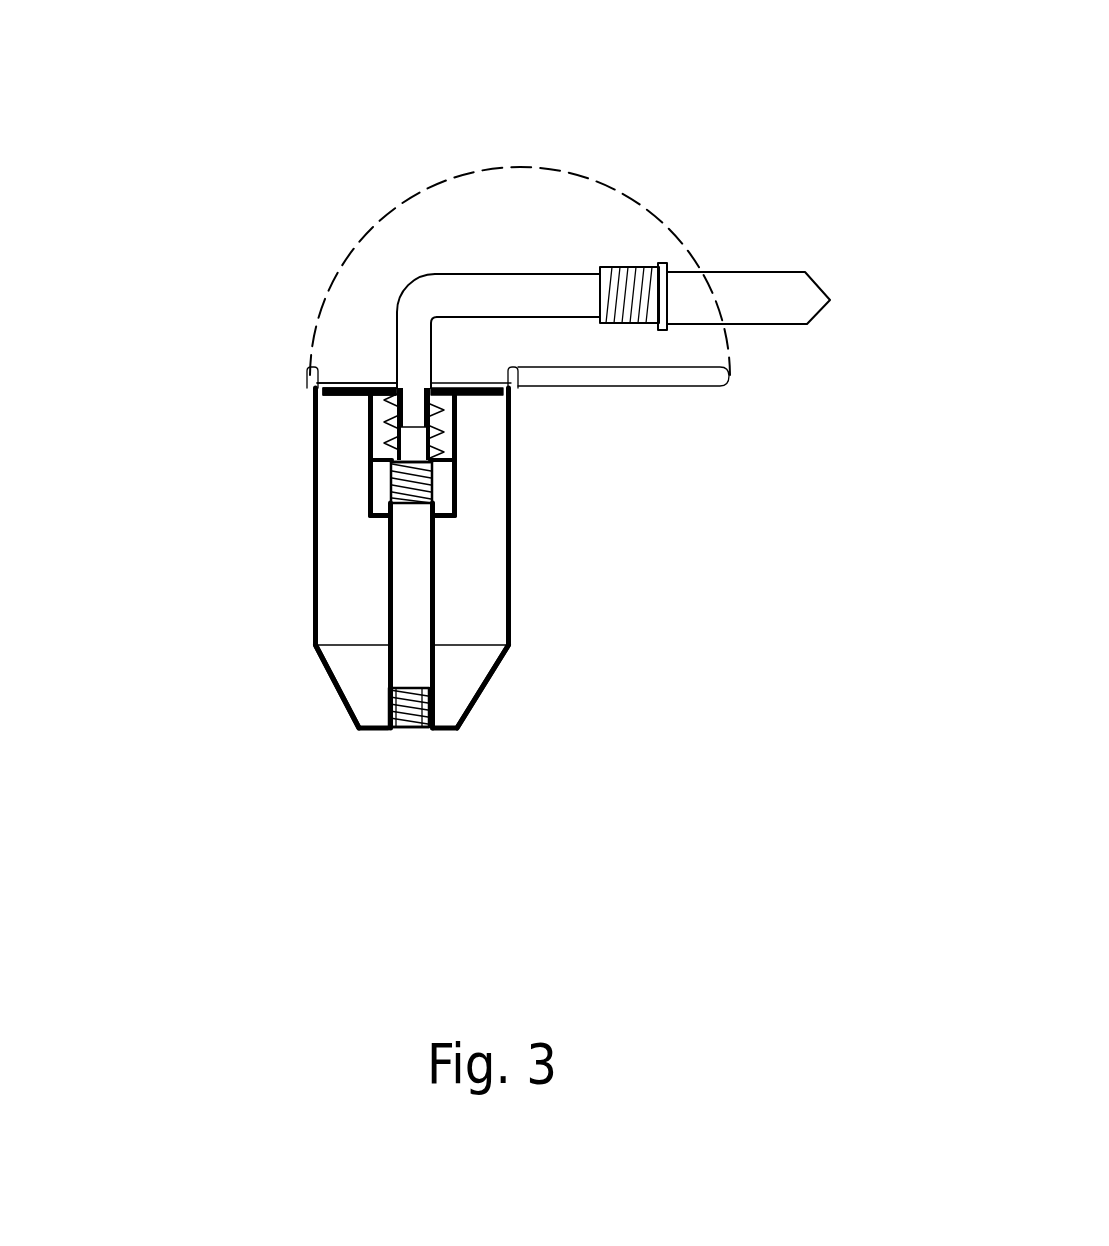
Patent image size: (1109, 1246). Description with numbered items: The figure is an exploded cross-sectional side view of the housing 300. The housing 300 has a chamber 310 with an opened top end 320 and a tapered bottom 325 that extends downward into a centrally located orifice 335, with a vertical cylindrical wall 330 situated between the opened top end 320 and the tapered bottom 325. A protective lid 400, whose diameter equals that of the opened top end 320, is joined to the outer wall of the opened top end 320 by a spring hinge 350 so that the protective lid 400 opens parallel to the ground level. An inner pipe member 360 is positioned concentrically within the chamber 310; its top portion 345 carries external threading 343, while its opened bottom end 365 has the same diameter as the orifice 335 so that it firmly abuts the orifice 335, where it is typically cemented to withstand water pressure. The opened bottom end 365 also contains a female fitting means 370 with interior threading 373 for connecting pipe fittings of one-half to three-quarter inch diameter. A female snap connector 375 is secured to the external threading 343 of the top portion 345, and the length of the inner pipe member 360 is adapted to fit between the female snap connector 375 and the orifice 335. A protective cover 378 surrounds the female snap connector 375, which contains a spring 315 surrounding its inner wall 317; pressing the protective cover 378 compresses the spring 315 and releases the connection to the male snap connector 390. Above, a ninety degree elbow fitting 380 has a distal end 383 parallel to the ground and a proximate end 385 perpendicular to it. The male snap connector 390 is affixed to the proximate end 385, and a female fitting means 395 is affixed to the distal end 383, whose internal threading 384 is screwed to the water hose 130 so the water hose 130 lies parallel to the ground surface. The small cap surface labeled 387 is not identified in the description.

The housing 300 is at (405, 770).
The chamber 310 is at (347, 575).
The spring 315 is at (436, 410).
The inner wall 317 is at (375, 440).
The opened top end 320 is at (352, 378).
The tapered bottom 325 is at (490, 692).
The vertical cylindrical wall 330 is at (312, 507).
The orifice 335 is at (410, 713).
The external threading 343 is at (453, 515).
The top portion 345 is at (425, 495).
The spring hinge 350 is at (514, 381).
The inner pipe member 360 is at (433, 597).
The opened bottom end 365 is at (387, 688).
The female fitting means 370 is at (413, 713).
The interior threading 373 is at (407, 733).
The female snap connector 375 is at (377, 418).
The protective cover 378 is at (352, 393).
The 90 degree elbow fitting 380 is at (399, 290).
The distal end 383 is at (523, 270).
The internal threading 384 is at (620, 268).
The proximate end 385 is at (394, 383).
The cap top surface 387 is at (383, 384).
The male snap connector 390 is at (445, 462).
The female fitting means 395 is at (668, 262).
The protective lid 400 is at (615, 388).
The water hose 130 is at (737, 267).